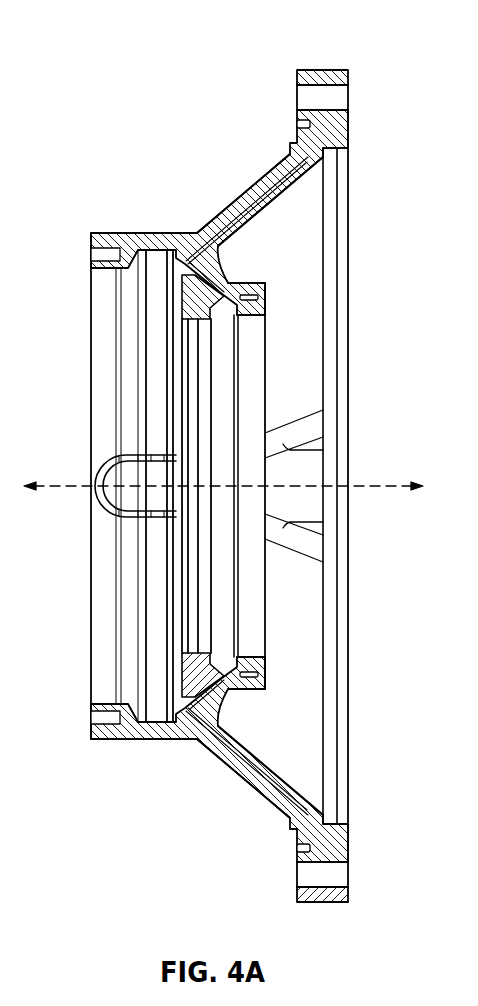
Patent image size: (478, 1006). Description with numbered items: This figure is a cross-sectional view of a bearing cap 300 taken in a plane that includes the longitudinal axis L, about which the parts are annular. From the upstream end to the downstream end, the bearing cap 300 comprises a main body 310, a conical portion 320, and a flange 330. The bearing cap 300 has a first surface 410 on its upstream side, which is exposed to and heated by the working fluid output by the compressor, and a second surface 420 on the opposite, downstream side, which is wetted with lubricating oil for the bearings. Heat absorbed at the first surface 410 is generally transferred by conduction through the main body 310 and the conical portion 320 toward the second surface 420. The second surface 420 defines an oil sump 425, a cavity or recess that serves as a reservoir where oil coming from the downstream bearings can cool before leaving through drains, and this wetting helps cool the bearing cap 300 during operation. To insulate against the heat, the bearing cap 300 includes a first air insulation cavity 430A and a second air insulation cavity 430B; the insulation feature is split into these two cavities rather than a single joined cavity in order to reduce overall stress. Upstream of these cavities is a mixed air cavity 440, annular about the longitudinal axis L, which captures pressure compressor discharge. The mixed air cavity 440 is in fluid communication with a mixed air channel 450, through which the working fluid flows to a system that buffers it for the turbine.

The bearing cap 300 is at (140, 72).
The main body 310 is at (142, 243).
The conical portion 320 is at (260, 190).
The flange 330 is at (318, 75).
The first surface 410 is at (253, 770).
The second surface 420 is at (280, 767).
The oil sump 425 is at (250, 710).
The first air insulation cavity 430A is at (185, 737).
The second air insulation cavity 430B is at (267, 677).
The mixed air cavity 440 is at (158, 694).
The mixed air channel 450 is at (128, 476).
The longitudinal axis L is at (47, 497).